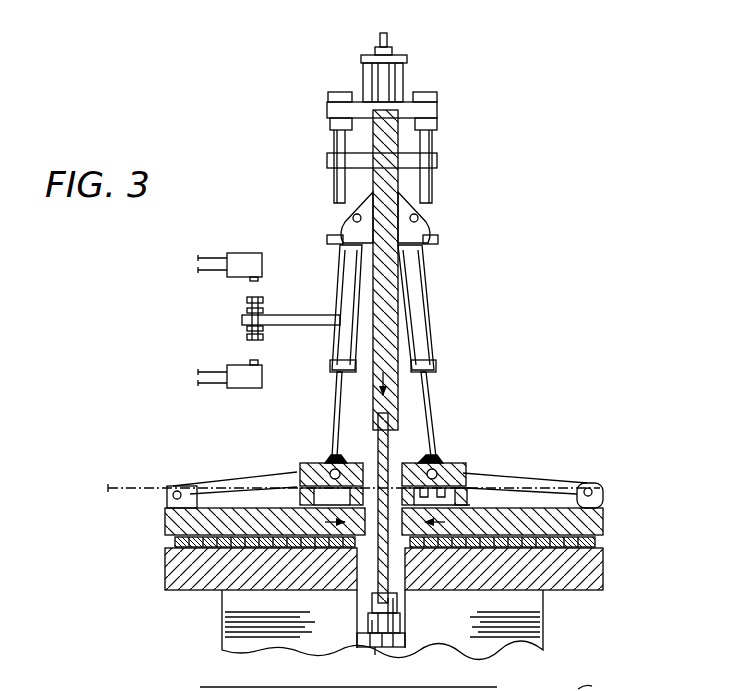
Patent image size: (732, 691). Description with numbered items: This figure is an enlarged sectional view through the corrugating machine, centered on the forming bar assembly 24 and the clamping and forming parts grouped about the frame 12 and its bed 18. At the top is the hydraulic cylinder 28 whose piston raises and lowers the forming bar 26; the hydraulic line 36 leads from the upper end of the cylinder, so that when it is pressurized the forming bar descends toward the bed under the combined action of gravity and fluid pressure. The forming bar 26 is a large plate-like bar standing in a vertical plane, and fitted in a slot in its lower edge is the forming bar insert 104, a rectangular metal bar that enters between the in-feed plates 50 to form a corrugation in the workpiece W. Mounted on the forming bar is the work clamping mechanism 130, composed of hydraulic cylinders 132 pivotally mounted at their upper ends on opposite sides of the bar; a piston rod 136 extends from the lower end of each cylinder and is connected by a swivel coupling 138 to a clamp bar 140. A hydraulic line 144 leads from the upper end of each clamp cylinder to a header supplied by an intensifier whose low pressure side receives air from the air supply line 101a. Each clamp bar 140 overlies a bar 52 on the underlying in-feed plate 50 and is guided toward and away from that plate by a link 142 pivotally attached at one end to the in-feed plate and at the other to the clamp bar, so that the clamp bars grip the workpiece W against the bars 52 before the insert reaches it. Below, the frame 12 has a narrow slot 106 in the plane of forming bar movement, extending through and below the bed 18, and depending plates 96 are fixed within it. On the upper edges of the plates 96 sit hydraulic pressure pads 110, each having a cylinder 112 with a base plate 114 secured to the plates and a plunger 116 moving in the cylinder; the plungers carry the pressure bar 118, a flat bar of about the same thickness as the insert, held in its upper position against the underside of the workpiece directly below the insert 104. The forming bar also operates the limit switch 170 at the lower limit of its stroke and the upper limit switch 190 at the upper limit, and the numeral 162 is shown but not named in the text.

The hydraulic line 36 is at (390, 44).
The hydraulic cylinder 28 is at (386, 82).
The forming bar assembly 24 is at (404, 142).
The forming bar 26 is at (391, 270).
The hydraulic line 144 is at (335, 236).
The work clamping mechanism 130 is at (440, 248).
The hydraulic cylinder 132 is at (341, 269).
The piston rod 136 is at (334, 380).
The swivel coupling 138 is at (330, 460).
The clamp bar 140 is at (304, 463).
The bar 52 is at (398, 484).
The workpiece W is at (147, 480).
The link 142 is at (222, 485).
The in-feed plate 50 is at (168, 521).
The bed 18 is at (165, 571).
The frame 12 is at (222, 628).
The forming bar insert 104 is at (388, 447).
The slot 106 is at (365, 598).
The pressure bar 118 is at (397, 604).
The plunger 116 is at (392, 614).
The hydraulic pressure pad 110 is at (370, 622).
The cylinder 112 is at (368, 634).
The depending plate 96 is at (401, 645).
The base plate 114 is at (376, 656).
The conveyor 162 is at (466, 688).
The air supply line 101a is at (609, 681).
The upper limit switch 190 is at (248, 253).
The limit switch 170 is at (246, 388).